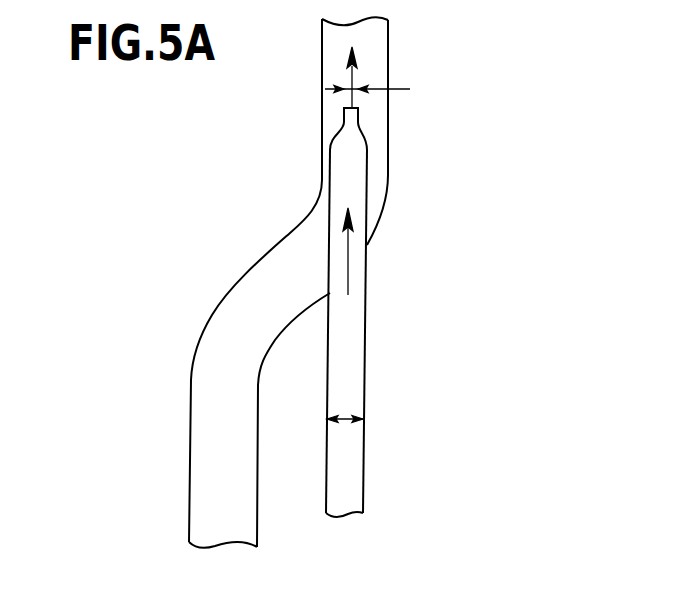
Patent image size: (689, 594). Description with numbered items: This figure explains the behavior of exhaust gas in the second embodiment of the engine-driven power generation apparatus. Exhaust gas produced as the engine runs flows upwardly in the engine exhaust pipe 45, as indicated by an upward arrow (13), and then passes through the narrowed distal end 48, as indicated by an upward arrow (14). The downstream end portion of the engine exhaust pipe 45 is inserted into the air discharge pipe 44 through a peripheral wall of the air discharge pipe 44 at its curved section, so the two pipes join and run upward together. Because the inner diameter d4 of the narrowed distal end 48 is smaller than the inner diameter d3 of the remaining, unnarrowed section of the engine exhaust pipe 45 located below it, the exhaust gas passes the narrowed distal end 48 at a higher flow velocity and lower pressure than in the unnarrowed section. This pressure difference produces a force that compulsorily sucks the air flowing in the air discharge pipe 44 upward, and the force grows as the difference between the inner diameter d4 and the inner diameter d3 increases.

The air discharge pipe 44 is at (188, 415).
The engine exhaust pipe 45 is at (368, 487).
The narrowed distal end 48 is at (350, 111).
The upward arrow 14 is at (349, 142).
The upward arrow 13 is at (348, 268).
The inner diameter of the narrowed distal end d4 is at (385, 90).
The inner diameter of the unnarrowed section d3 is at (344, 421).